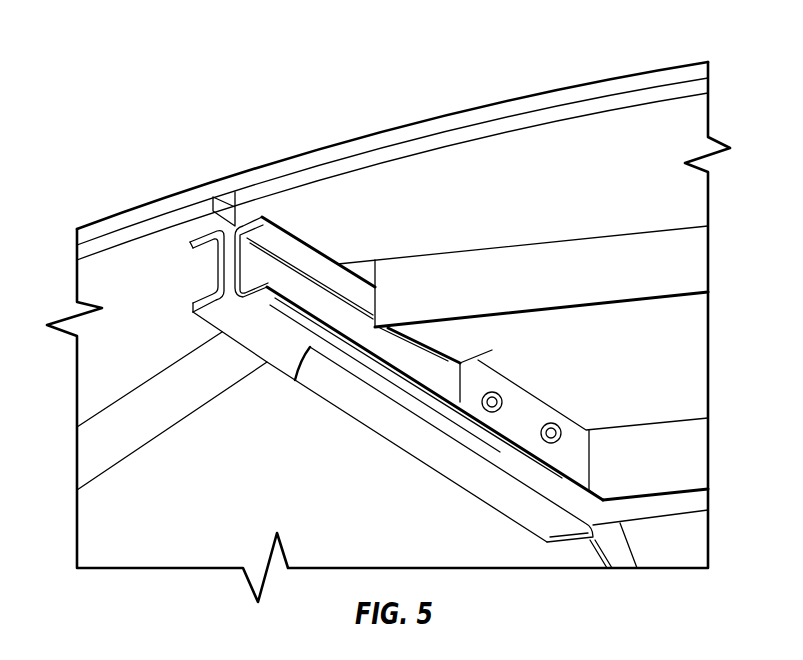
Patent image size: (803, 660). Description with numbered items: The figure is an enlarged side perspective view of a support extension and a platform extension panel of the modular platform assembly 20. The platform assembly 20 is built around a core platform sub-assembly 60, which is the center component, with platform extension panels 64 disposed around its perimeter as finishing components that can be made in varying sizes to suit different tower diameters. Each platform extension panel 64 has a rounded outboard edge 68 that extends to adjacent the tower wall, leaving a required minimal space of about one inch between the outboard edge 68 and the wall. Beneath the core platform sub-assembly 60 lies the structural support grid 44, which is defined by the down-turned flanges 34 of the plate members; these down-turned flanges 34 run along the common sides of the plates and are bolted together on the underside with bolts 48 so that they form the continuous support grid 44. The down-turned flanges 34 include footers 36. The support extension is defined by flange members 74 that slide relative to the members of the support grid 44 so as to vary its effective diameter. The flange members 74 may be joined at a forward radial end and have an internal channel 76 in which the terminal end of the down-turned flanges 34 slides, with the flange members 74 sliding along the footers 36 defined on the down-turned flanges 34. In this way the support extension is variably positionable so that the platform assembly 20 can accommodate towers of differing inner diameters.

The platform assembly 20 is at (108, 148).
The down-turned flanges 34 is at (693, 472).
The footers 36 is at (372, 407).
The structural support grid 44 is at (449, 465).
The bolts 48 is at (562, 436).
The core platform sub-assembly 60 is at (125, 512).
The platform extension panels 64 is at (622, 142).
The rounded outboard edge 68 is at (447, 116).
The flange members 74 is at (220, 270).
The internal channel 76 is at (268, 323).